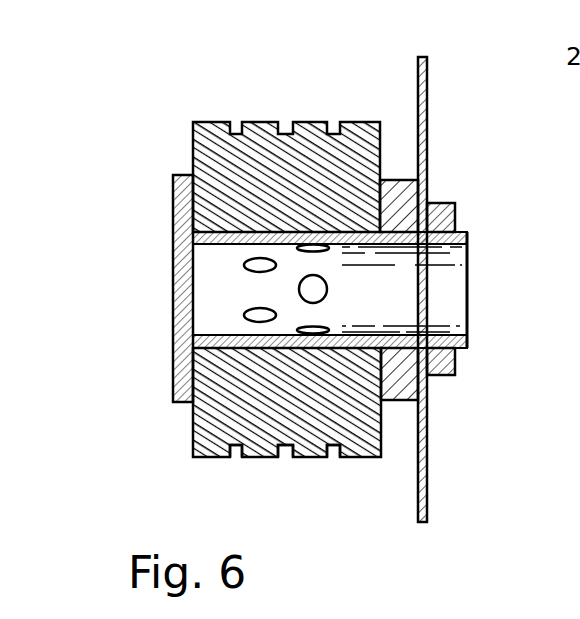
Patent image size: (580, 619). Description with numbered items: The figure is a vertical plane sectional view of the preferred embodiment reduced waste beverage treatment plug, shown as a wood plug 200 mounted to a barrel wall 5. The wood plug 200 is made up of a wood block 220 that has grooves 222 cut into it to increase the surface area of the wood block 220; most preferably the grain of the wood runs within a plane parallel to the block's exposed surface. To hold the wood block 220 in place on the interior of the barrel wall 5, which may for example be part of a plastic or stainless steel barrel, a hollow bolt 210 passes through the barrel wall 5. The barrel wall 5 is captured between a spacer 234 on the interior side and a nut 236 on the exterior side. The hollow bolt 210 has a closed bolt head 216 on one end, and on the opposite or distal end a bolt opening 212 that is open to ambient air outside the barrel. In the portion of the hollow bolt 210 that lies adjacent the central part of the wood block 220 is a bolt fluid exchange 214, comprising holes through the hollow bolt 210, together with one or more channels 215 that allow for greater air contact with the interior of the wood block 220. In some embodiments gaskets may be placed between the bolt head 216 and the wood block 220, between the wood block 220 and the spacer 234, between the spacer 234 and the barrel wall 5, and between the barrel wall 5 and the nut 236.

The wood plug 200 is at (176, 58).
The barrel wall 5 is at (427, 105).
The hollow bolt 210 is at (470, 240).
The bolt opening 212 is at (462, 302).
The bolt fluid exchange 214 is at (244, 316).
The channels 215 is at (249, 233).
The bolt head 216 is at (173, 396).
The wood block 220 is at (340, 121).
The grooves 222 is at (333, 448).
The spacer 234 is at (427, 185).
The nut 236 is at (453, 376).